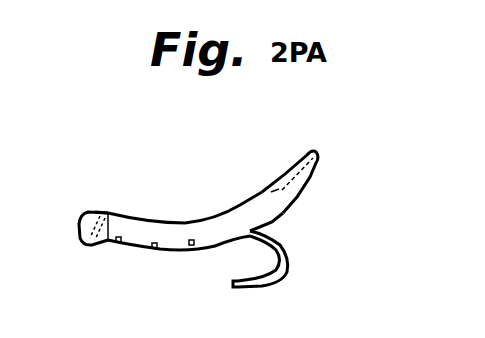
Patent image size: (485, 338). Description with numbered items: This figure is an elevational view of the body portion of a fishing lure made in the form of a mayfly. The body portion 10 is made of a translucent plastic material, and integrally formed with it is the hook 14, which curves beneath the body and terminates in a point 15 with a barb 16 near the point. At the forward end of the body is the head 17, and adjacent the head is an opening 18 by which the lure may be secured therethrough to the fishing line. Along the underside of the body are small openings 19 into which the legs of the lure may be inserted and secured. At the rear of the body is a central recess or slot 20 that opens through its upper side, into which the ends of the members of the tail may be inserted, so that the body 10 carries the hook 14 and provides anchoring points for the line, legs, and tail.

The body portion 10 is at (280, 208).
The hook 14 is at (290, 263).
The point 15 is at (234, 288).
The barb 16 is at (260, 269).
The head 17 is at (79, 225).
The opening 18 is at (113, 207).
The small openings 19 is at (150, 251).
The central recess or slot 20 is at (308, 188).